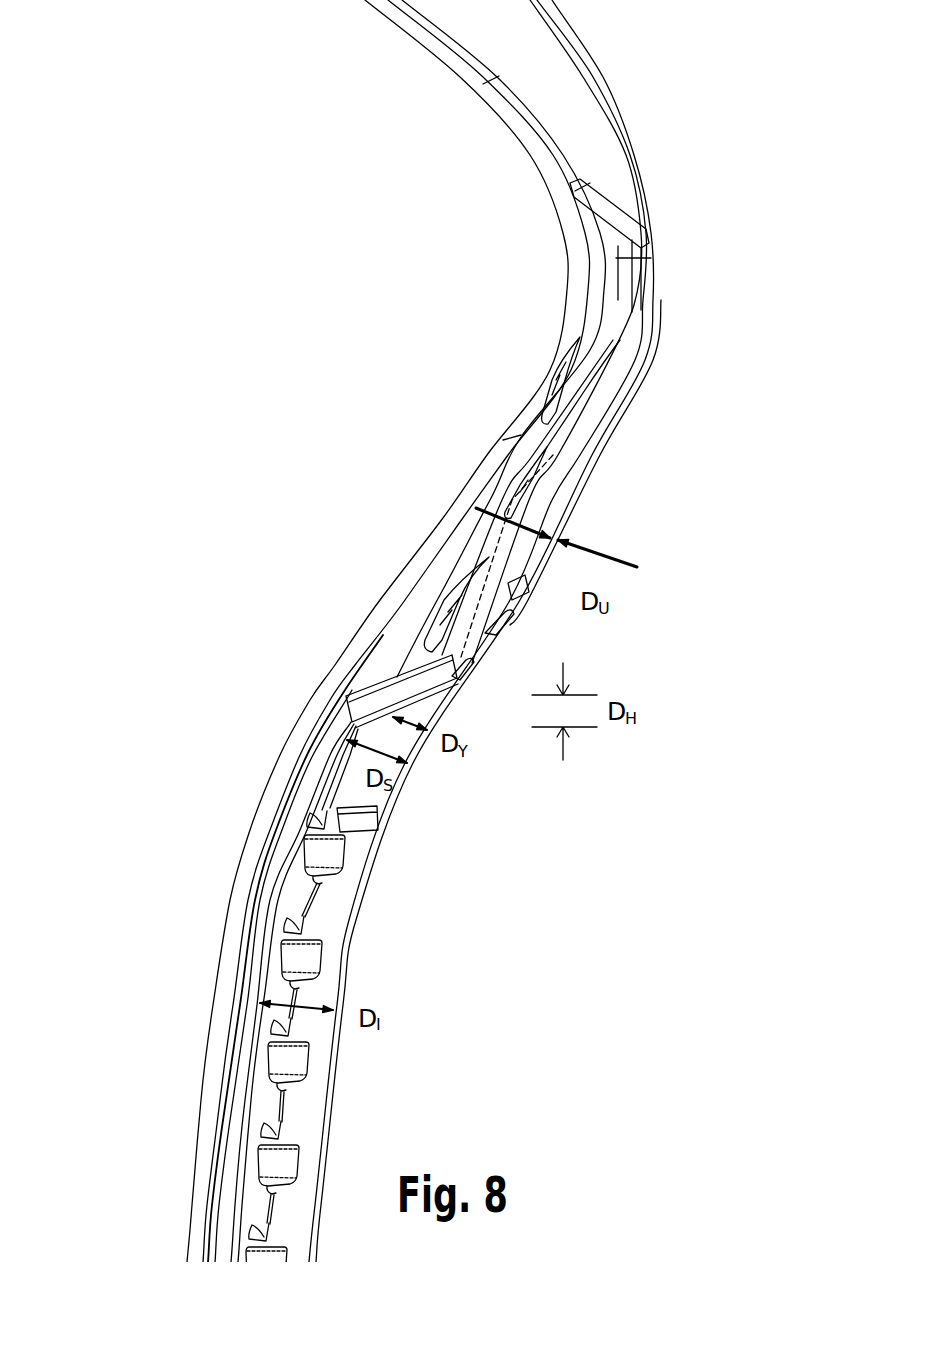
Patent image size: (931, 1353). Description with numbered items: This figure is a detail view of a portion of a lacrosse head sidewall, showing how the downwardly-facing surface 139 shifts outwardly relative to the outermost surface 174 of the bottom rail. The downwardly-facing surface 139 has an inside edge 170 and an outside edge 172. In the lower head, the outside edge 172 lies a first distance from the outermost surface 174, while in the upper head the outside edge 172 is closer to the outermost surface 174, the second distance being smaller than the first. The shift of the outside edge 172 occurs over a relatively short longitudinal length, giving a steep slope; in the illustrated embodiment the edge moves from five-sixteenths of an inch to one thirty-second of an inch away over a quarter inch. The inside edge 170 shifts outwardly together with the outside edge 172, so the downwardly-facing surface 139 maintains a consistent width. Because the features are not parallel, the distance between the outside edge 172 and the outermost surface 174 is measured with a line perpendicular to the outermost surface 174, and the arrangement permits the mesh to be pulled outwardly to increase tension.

The downwardly-facing surface 139 is at (308, 780).
The inside edge 170 is at (263, 872).
The outside edge 172 is at (280, 887).
The outermost surface of the bottom rail 174 is at (571, 514).